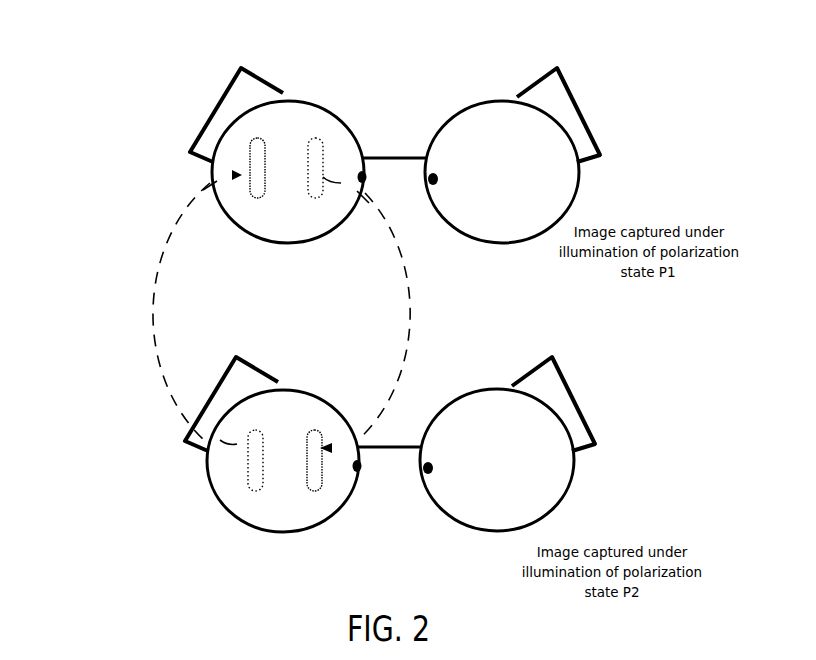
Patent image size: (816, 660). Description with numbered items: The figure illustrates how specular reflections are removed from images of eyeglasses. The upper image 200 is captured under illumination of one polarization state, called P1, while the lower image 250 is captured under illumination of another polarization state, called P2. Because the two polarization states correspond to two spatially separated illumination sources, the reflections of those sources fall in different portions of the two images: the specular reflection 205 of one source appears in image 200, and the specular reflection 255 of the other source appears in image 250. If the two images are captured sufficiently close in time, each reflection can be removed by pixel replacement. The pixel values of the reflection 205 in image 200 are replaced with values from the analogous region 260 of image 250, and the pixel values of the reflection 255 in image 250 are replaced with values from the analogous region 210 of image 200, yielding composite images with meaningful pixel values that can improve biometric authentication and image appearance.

The upper image 200 is at (178, 52).
The specular reflection 205 is at (267, 157).
The analogous region 210 is at (322, 161).
The lower image 250 is at (108, 395).
The specular reflection 255 is at (322, 437).
The analogous region 260 is at (265, 447).